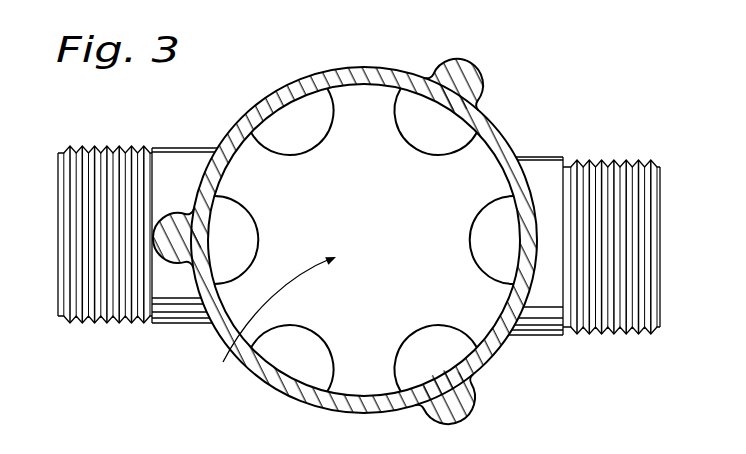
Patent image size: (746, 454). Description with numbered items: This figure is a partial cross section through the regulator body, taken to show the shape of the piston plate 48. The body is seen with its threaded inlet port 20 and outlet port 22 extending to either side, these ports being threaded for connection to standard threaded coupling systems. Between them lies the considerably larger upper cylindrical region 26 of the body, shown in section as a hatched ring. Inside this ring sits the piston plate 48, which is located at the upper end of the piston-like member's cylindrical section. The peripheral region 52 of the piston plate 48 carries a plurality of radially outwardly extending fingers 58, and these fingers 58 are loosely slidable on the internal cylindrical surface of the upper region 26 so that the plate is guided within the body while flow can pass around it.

The inlet port 20 is at (658, 167).
The outlet port 22 is at (87, 147).
The upper cylindrical region 26 is at (505, 138).
The peripheral region 52 is at (287, 161).
The fingers 58 is at (233, 304).
The piston plate 48 is at (242, 336).